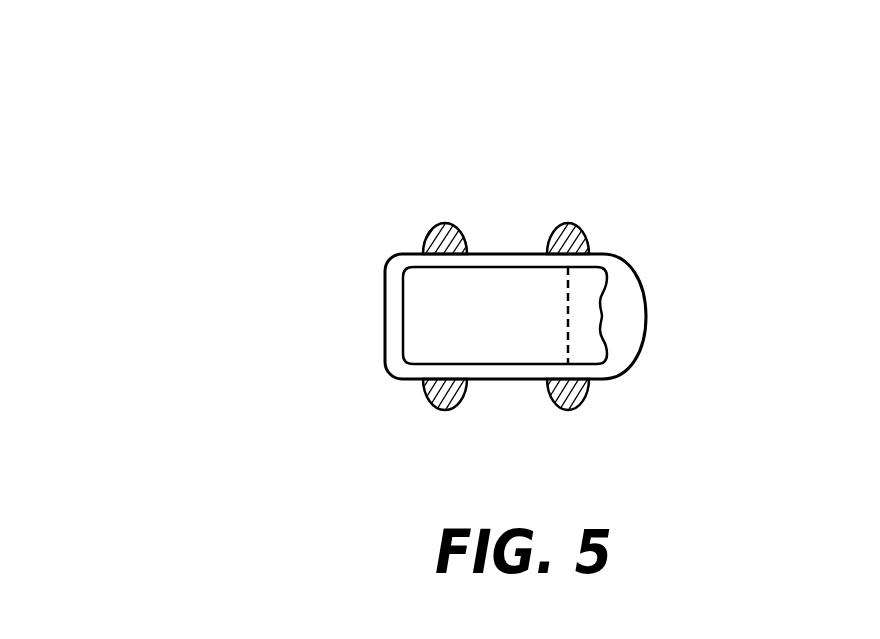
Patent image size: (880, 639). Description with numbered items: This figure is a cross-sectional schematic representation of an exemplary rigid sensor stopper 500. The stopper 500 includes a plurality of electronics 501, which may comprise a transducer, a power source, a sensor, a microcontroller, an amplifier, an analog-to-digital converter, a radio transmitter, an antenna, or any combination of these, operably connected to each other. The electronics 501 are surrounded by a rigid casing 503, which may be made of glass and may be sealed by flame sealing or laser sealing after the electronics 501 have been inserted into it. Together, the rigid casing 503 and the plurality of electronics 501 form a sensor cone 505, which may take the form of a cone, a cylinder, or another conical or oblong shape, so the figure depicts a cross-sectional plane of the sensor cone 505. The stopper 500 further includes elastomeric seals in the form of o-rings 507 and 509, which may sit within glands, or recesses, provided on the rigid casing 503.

The rigid sensor stopper 500 is at (529, 24).
The plurality of electronics 501 is at (500, 345).
The rigid casing 503 is at (610, 263).
The sensor cone 505 is at (410, 251).
The o-ring 507 is at (447, 223).
The o-ring 509 is at (568, 224).